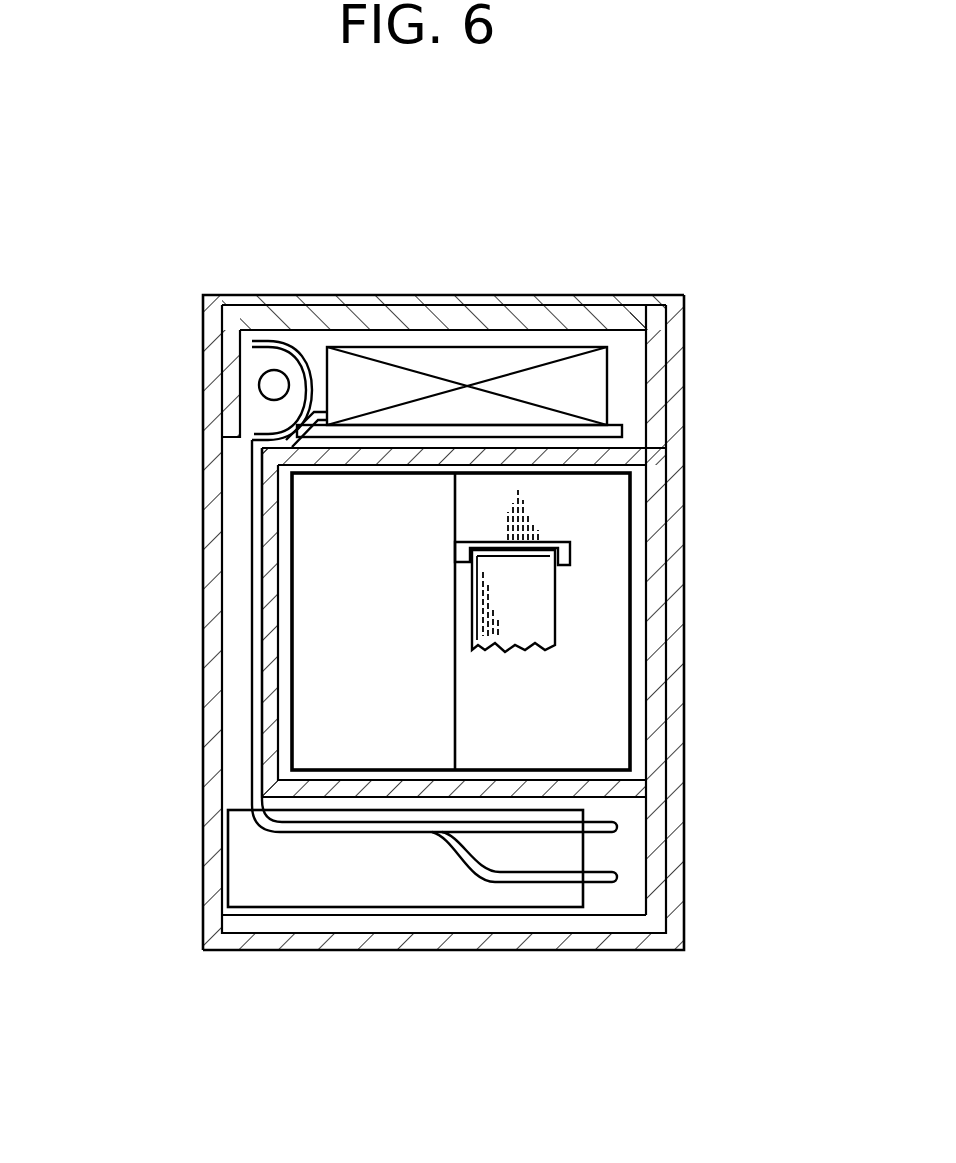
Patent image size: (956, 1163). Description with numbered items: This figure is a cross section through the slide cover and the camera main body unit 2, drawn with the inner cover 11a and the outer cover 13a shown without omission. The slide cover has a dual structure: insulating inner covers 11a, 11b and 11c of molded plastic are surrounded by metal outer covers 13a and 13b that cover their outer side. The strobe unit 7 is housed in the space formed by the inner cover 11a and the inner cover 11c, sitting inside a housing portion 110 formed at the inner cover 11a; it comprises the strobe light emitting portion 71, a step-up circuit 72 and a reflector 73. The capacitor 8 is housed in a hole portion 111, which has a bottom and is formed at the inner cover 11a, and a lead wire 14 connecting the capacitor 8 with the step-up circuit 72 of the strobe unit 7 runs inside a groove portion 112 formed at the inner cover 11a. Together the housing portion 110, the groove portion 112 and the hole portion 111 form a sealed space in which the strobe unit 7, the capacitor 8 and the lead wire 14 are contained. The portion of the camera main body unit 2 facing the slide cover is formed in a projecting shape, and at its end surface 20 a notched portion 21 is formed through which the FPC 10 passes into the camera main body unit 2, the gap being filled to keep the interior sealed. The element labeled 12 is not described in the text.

The camera main body unit 2 is at (635, 547).
The strobe unit 7 is at (437, 288).
The capacitor 8 is at (248, 863).
The FPC 10 is at (537, 620).
The inner cover 11a is at (652, 388).
The inner cover 11b is at (655, 693).
The inner cover 11c is at (637, 318).
The left wall block 12 is at (210, 398).
The outer cover 13a is at (203, 607).
The outer cover 13b is at (683, 825).
The lead wire 14 is at (253, 722).
The end surface 20 is at (573, 745).
The notched portion 21 is at (565, 540).
The strobe light emitting portion 71 is at (276, 372).
The step-up circuit 72 is at (459, 317).
The reflector 73 is at (302, 396).
The housing portion 110 is at (592, 333).
The hole portion 111 is at (617, 903).
The groove portion 112 is at (228, 650).